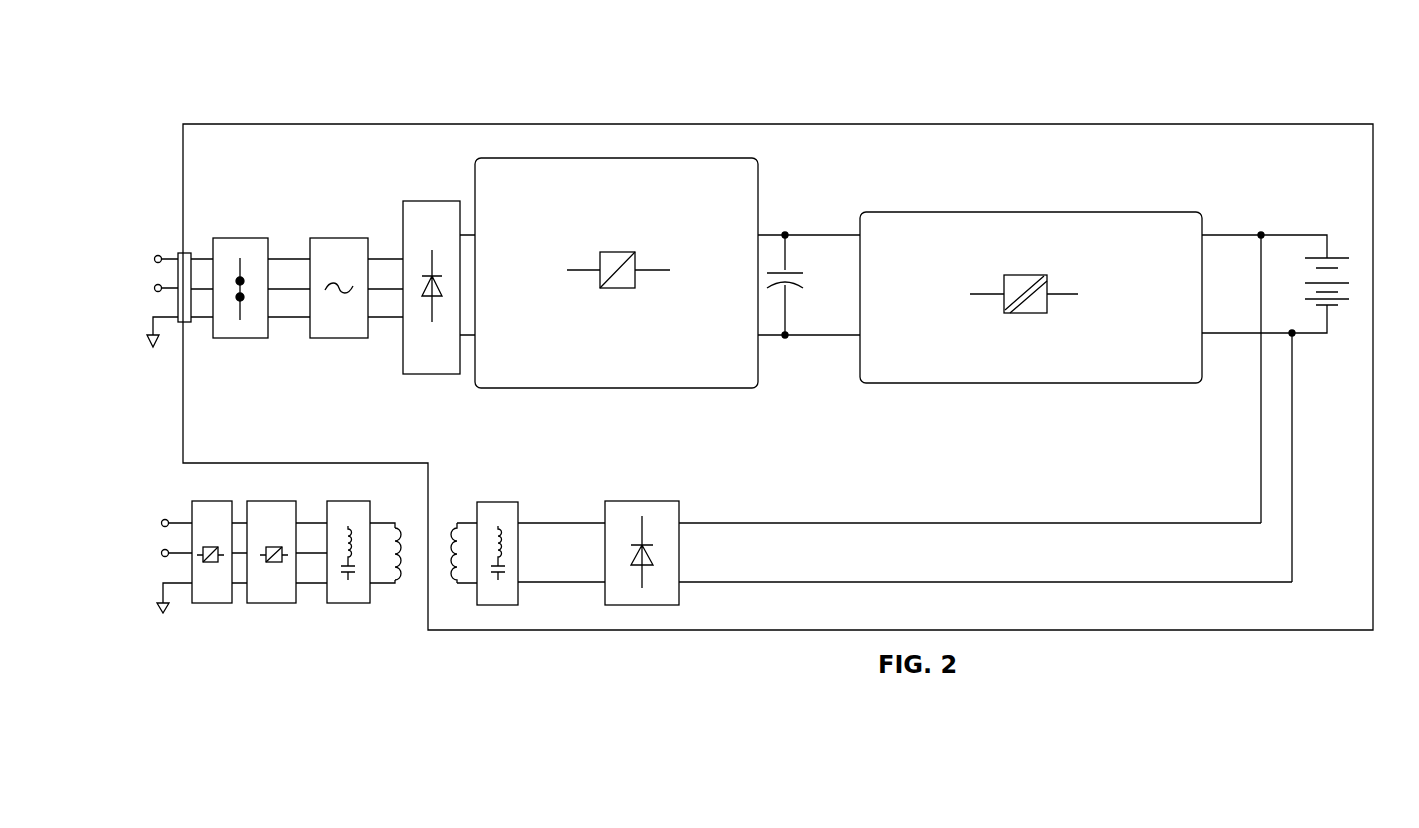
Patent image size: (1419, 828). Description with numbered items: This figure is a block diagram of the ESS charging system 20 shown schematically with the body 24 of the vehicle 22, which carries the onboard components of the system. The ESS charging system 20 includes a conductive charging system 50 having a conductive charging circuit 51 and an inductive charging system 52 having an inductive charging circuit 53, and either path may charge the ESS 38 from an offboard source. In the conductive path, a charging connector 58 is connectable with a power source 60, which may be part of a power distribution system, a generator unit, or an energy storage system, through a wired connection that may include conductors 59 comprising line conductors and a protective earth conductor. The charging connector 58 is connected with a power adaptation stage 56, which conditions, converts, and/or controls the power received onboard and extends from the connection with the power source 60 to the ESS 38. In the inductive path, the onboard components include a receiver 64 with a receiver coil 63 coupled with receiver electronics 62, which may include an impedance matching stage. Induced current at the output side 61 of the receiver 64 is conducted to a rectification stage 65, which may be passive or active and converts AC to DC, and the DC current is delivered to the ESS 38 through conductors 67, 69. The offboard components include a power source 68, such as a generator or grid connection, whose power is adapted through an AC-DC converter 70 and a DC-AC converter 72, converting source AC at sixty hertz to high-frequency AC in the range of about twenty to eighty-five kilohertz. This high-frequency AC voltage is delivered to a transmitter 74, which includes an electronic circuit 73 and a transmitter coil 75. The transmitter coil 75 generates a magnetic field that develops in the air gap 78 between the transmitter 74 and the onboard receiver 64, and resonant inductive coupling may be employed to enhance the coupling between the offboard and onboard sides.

The ESS charging system 20 is at (1184, 197).
The vehicle 22 is at (545, 88).
The body 24 is at (1010, 124).
The ESS 38 is at (1340, 258).
The conductive charging system 50 is at (1288, 257).
The conductive charging circuit 51 is at (818, 226).
The inductive charging system 52 is at (1307, 548).
The inductive charging circuit 53 is at (843, 519).
The power adaptation stage 56 is at (770, 150).
The charging connector 58 is at (186, 326).
The conductors 59 is at (167, 293).
The power source 60 is at (167, 252).
The output side 61 is at (525, 598).
The receiver electronics 62 is at (497, 501).
The receiver coil 63 is at (457, 524).
The receiver 64 is at (578, 562).
The rectification stage 65 is at (683, 499).
The conductor 67 is at (1090, 525).
The power source 68 is at (272, 569).
The conductor 69 is at (1070, 582).
The AC-DC converter 70 is at (212, 603).
The DC-AC converter 72 is at (272, 603).
The electronic circuit 73 is at (348, 603).
The transmitter 74 is at (363, 526).
The transmitter coil 75 is at (395, 528).
The air gap 78 is at (418, 566).